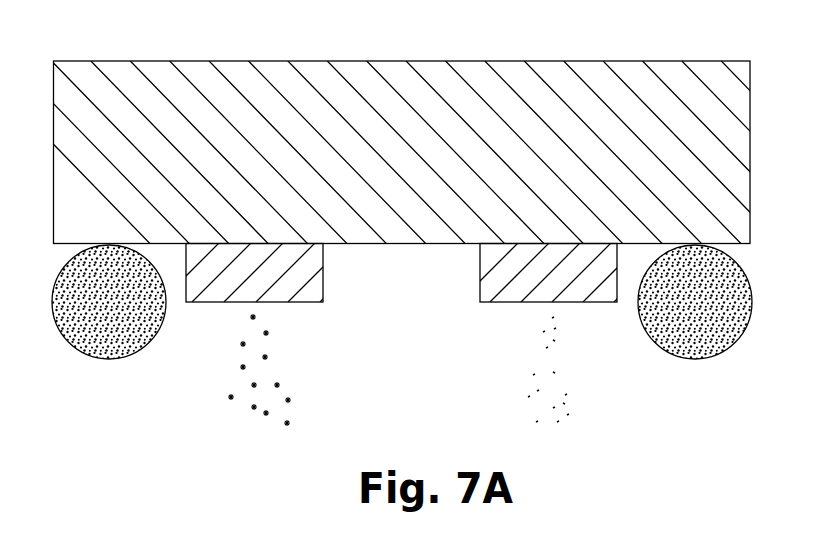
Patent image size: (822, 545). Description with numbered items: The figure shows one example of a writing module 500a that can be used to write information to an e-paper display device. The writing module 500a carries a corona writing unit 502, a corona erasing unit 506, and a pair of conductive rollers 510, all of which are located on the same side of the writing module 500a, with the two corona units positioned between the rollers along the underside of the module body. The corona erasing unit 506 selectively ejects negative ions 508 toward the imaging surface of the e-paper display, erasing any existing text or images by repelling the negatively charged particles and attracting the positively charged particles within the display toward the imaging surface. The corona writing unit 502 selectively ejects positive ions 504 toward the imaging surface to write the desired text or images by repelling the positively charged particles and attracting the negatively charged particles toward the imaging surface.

The writing module 500a is at (650, 62).
The corona writing unit 502 is at (323, 272).
The positive ions 504 is at (265, 357).
The corona erasing unit 506 is at (480, 268).
The negative ions 508 is at (537, 368).
The conductive rollers 510 is at (83, 350).